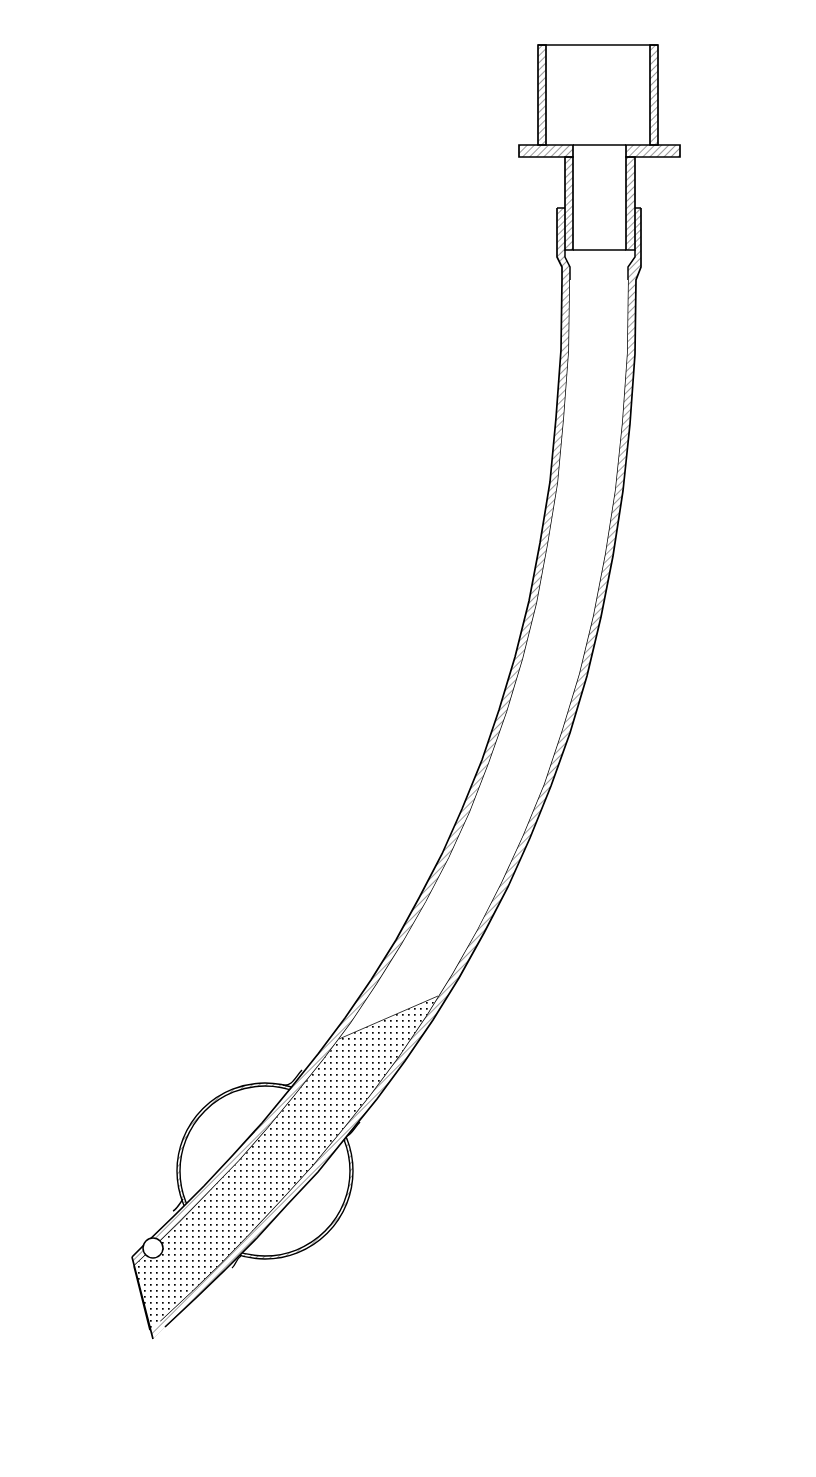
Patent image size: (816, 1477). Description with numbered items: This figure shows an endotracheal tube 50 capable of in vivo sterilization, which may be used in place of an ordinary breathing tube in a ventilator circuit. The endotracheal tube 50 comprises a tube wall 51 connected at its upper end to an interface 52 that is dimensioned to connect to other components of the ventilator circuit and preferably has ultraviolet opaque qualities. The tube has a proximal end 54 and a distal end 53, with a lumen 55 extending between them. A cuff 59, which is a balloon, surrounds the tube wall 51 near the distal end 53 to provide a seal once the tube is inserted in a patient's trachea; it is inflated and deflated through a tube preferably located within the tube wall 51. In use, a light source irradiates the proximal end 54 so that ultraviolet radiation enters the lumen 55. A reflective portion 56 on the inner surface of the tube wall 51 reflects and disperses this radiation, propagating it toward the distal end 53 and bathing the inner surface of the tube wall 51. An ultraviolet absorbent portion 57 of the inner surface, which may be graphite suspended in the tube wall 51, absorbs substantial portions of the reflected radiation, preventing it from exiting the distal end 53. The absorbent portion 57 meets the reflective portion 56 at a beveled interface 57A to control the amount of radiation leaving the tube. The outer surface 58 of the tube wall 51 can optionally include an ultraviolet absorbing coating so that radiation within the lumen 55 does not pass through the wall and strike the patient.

The endotracheal tube 50 is at (192, 540).
The tube wall 51 is at (628, 432).
The interface 52 is at (681, 151).
The distal end 53 is at (137, 1297).
The proximal end 54 is at (590, 45).
The lumen 55 is at (552, 739).
The reflective portion 56 is at (618, 364).
The ultraviolet absorbent portion 57 is at (142, 1253).
The beveled interface 57A is at (392, 1018).
The outer surface 58 is at (608, 605).
The cuff 59 is at (328, 1223).